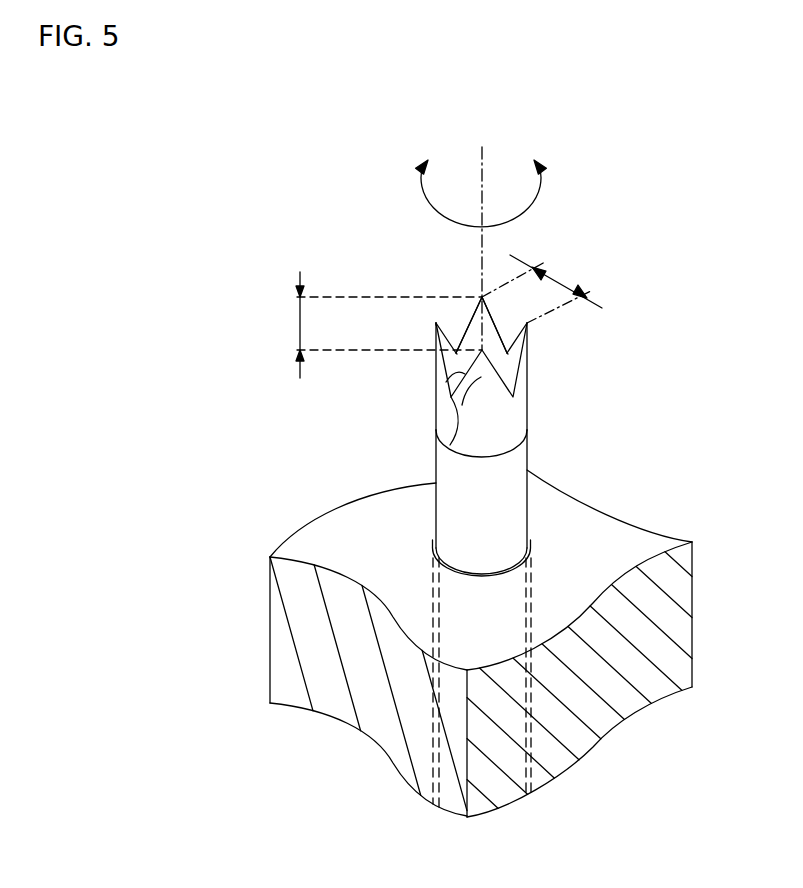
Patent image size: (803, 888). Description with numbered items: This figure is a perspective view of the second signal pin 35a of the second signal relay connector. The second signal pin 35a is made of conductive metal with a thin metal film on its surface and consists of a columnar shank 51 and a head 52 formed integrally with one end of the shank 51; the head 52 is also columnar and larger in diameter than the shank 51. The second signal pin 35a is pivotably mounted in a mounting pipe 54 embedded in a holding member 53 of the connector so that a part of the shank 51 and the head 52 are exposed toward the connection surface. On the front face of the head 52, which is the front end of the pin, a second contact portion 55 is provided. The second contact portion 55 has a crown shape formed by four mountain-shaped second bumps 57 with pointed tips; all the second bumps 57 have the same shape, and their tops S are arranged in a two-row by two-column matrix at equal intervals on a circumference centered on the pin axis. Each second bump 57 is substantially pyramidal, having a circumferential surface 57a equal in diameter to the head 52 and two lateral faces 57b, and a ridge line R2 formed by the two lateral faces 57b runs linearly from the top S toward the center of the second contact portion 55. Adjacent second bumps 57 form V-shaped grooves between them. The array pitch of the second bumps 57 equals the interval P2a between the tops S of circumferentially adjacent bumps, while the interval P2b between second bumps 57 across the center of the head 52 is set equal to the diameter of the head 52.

The second signal pin 35a is at (553, 466).
The shank 51 is at (515, 518).
The head 52 is at (516, 413).
The holding member 53 is at (333, 520).
The mounting pipe 54 is at (531, 727).
The second contact portion 55 is at (410, 351).
The second bump 57 is at (529, 335).
The circumferential surface 57a is at (443, 447).
The lateral face 57b is at (478, 326).
The top S is at (479, 296).
The ridge line R2 is at (470, 318).
The interval between tops of circumferentially adjacent second bumps P2a is at (542, 289).
The interval between second bumps across the center of the head P2b is at (367, 325).